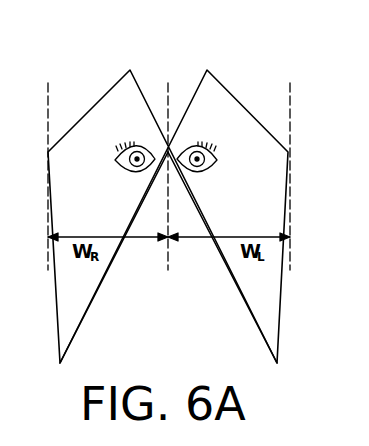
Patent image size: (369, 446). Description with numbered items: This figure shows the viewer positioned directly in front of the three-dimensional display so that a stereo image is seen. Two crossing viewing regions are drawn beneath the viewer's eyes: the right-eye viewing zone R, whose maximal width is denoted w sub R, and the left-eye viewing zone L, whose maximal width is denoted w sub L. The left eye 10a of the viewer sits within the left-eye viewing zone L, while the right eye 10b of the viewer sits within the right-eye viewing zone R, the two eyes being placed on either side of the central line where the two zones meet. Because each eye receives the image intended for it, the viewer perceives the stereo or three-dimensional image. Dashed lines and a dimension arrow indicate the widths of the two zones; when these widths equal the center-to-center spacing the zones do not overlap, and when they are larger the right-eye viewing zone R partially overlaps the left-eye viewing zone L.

The left eye 10a is at (196, 148).
The right eye 10b is at (143, 148).
The right-eye viewing zone R is at (80, 316).
The left-eye viewing zone L is at (258, 317).